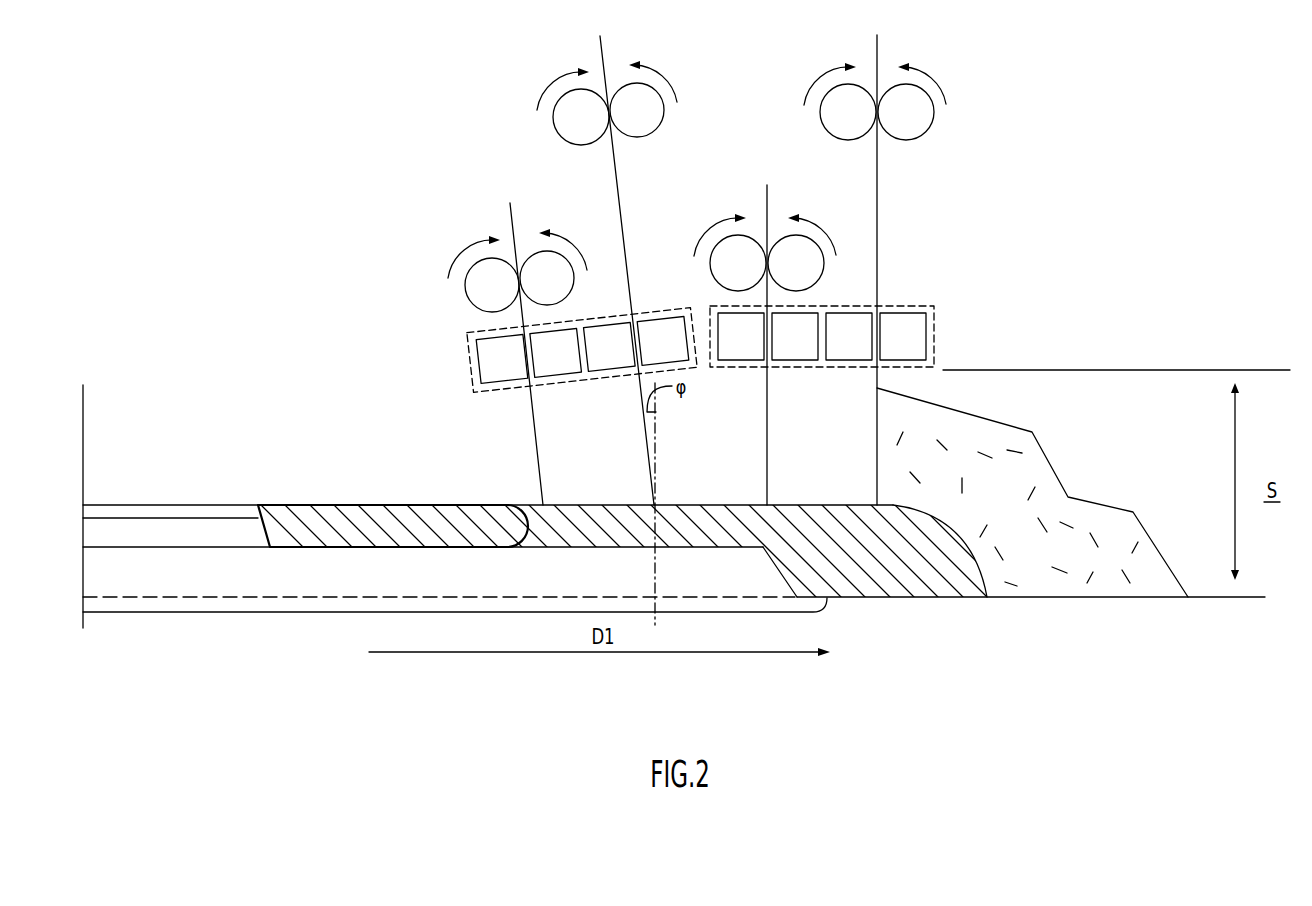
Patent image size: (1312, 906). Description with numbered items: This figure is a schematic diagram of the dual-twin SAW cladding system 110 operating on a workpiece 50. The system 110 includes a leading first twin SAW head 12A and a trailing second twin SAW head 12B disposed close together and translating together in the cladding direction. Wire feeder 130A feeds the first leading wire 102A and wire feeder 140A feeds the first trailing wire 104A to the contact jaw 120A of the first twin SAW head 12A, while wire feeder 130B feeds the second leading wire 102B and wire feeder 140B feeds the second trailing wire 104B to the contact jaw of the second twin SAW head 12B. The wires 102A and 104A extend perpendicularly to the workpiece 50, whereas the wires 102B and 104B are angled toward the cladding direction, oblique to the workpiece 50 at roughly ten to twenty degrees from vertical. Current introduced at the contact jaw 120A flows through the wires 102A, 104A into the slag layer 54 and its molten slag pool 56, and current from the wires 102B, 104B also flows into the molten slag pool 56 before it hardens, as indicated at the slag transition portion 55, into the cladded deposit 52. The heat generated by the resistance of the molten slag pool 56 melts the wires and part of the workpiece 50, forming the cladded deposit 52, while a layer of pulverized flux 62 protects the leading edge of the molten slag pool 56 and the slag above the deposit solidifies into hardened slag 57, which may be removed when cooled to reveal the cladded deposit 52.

The dual-twin SAW cladding system 110 is at (276, 132).
The workpiece 50 is at (686, 509).
The cladded deposit 52 is at (423, 599).
The slag layer 54 is at (659, 504).
The slag transition portion 55 is at (393, 492).
The molten slag pool 56 is at (875, 531).
The hardened slag 57 is at (170, 488).
The layer of pulverized flux 62 is at (1032, 492).
The first twin SAW head 12A is at (842, 365).
The second twin SAW head 12B is at (559, 372).
The contact jaw 120A is at (841, 348).
The first leading wire 102A is at (903, 270).
The second leading wire 102B is at (635, 270).
The first trailing wire 104A is at (740, 335).
The second trailing wire 104B is at (501, 335).
The wire feeder 130A is at (899, 101).
The wire feeder 130B is at (579, 103).
The wire feeder 140A is at (741, 252).
The wire feeder 140B is at (488, 270).